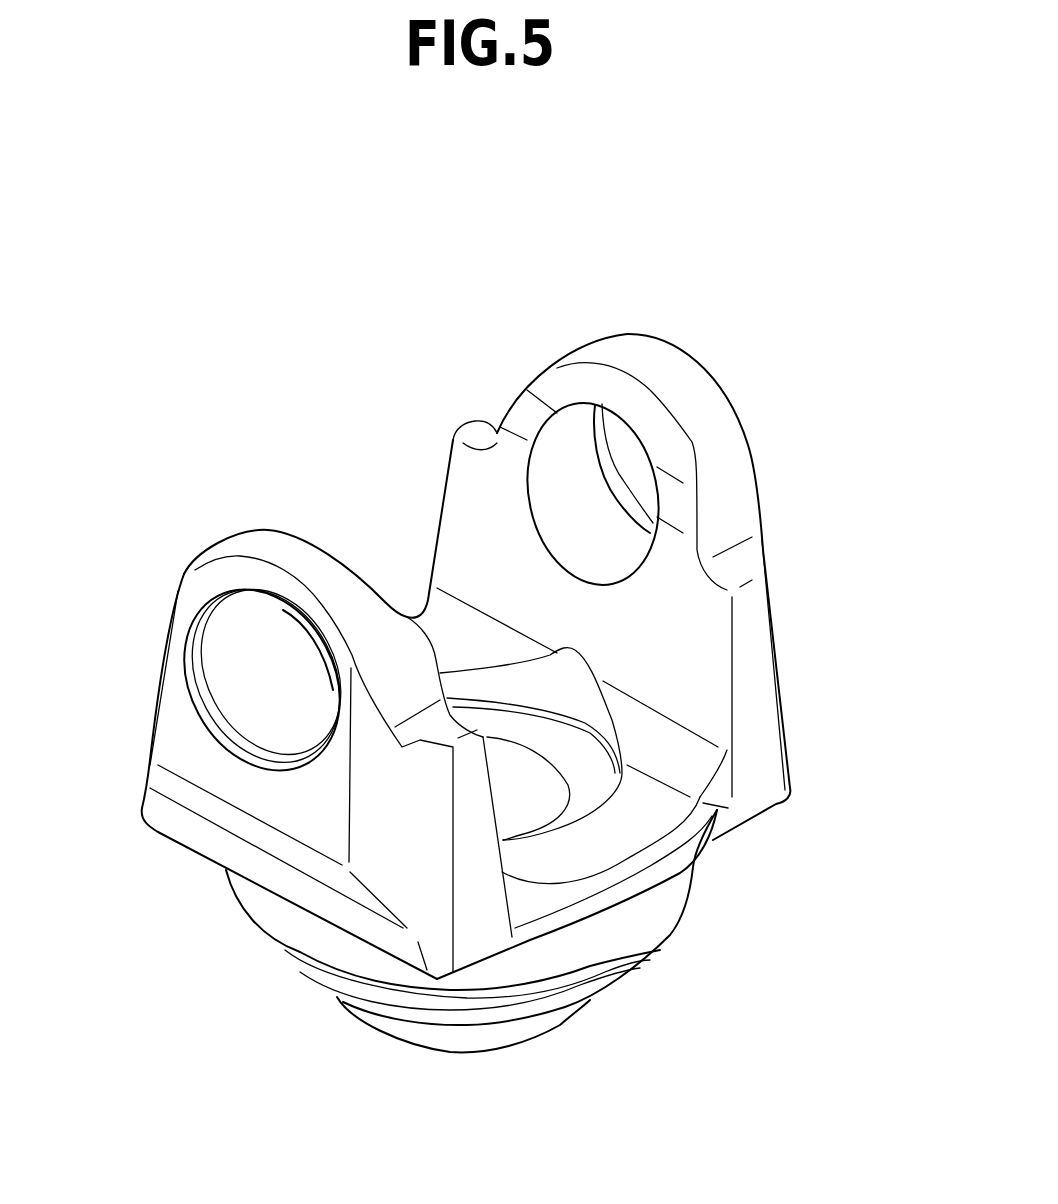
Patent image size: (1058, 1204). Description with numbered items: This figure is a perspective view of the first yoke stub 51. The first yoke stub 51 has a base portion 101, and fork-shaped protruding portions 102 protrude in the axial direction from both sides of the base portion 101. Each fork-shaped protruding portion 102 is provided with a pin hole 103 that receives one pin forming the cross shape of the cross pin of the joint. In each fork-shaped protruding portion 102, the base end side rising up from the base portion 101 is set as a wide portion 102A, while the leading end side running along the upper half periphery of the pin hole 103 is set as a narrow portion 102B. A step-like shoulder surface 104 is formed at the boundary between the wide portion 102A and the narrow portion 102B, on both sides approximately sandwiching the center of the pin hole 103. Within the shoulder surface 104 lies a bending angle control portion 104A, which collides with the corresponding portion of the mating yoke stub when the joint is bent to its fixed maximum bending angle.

The first yoke stub 51 is at (692, 897).
The base portion 101 is at (640, 928).
The fork-shaped protruding portion 102 is at (468, 538).
The wide portion 102A is at (755, 687).
The narrow portion 102B is at (656, 360).
The pin hole 103 is at (557, 452).
The shoulder surface 104 is at (460, 434).
The bending angle control portion 104A is at (462, 440).